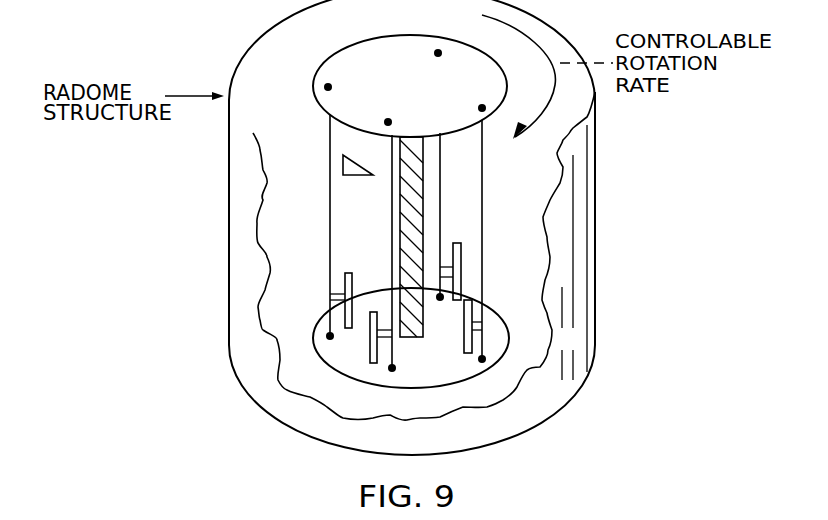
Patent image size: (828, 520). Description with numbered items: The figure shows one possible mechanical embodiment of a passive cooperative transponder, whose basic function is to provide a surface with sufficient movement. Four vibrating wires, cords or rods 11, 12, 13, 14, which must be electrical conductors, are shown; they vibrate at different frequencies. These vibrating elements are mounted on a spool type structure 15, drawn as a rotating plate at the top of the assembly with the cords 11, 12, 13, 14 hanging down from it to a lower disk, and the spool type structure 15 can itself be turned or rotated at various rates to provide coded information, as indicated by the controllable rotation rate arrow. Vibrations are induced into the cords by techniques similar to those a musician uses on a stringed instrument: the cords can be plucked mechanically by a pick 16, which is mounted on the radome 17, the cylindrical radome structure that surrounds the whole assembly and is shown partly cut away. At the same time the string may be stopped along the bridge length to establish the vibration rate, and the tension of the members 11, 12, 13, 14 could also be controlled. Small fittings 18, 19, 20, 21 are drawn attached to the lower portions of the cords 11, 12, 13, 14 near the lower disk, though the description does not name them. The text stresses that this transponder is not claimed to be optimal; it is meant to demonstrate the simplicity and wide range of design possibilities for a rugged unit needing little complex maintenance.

The vibrating wire 11 is at (330, 203).
The vibrating wire 12 is at (392, 232).
The vibrating wire 13 is at (440, 182).
The vibrating wire 14 is at (483, 218).
The spool type structure 15 is at (346, 46).
The pick 16 is at (349, 175).
The radome 17 is at (229, 203).
The antenna element 18 is at (353, 282).
The antenna element 19 is at (370, 347).
The antenna element 20 is at (463, 247).
The antenna element 21 is at (463, 342).